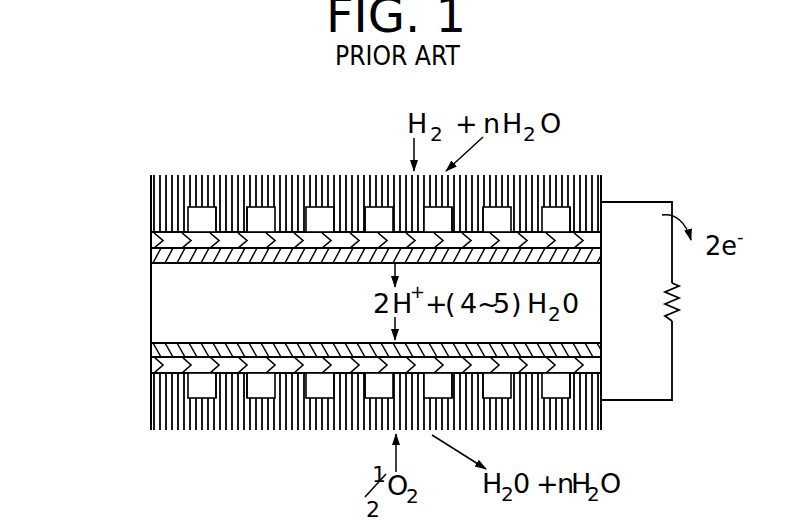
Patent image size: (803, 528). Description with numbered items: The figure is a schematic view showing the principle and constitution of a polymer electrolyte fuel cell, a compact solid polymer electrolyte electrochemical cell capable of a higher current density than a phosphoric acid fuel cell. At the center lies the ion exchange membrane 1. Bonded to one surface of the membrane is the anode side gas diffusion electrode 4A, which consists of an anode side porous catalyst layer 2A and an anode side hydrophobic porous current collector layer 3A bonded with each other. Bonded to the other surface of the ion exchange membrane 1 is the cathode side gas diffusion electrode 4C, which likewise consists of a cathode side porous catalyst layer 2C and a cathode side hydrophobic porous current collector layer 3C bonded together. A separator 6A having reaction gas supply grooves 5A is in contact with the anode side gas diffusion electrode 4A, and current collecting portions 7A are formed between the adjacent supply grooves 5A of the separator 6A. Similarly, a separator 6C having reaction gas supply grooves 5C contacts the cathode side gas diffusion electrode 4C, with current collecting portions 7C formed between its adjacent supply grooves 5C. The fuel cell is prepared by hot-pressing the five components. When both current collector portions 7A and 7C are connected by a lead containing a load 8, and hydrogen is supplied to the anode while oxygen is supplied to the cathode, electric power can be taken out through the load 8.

The ion exchange membrane 1 is at (168, 304).
The anode side porous catalyst layer 2A is at (155, 256).
The anode side hydrophobic porous current collector layer 3A is at (155, 240).
The anode side gas diffusion electrode 4A is at (317, 247).
The reaction gas supply grooves 5A is at (203, 221).
The separator 6A is at (270, 188).
The current collecting portions 7A is at (338, 205).
The load 8 is at (655, 301).
The cathode side porous catalyst layer 2C is at (155, 350).
The cathode side hydrophobic porous current collector layer 3C is at (155, 365).
The cathode side gas diffusion electrode 4C is at (317, 357).
The reaction gas supply grooves 5C is at (208, 387).
The separator 6C is at (265, 412).
The current collecting portions 7C is at (345, 383).